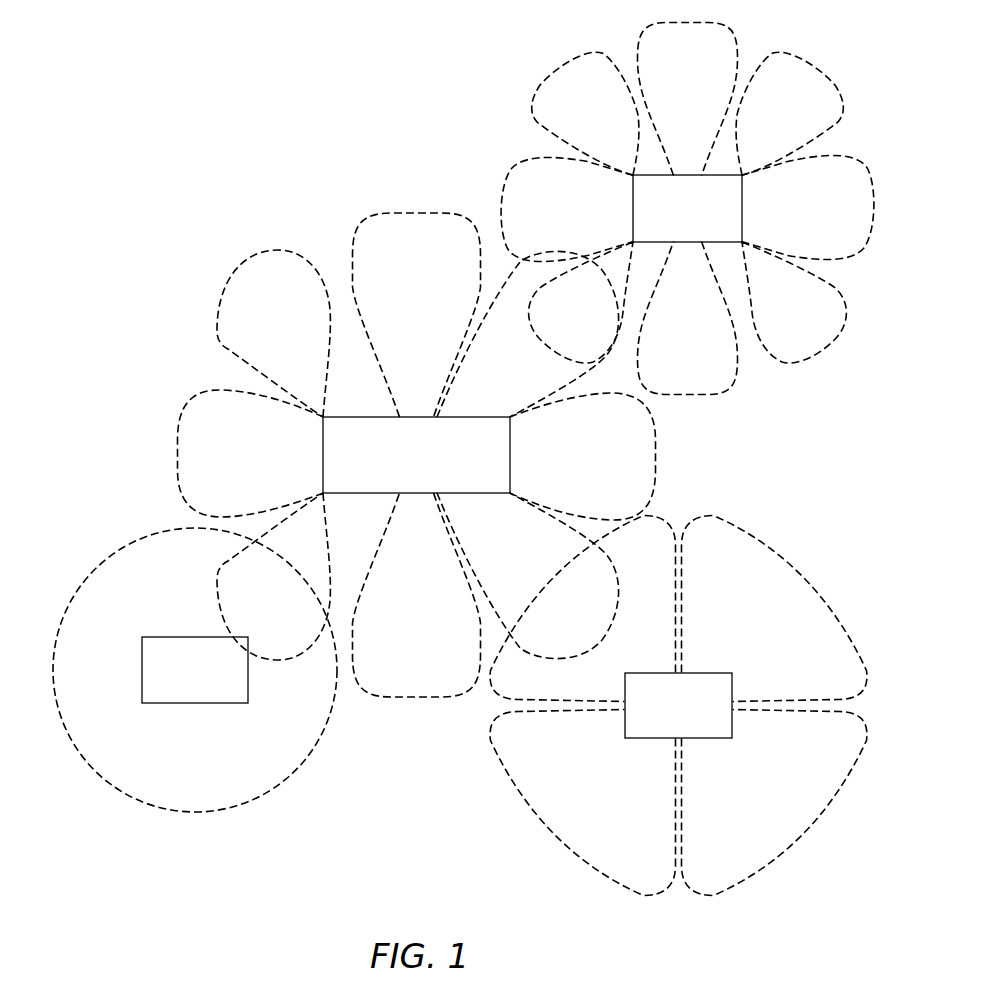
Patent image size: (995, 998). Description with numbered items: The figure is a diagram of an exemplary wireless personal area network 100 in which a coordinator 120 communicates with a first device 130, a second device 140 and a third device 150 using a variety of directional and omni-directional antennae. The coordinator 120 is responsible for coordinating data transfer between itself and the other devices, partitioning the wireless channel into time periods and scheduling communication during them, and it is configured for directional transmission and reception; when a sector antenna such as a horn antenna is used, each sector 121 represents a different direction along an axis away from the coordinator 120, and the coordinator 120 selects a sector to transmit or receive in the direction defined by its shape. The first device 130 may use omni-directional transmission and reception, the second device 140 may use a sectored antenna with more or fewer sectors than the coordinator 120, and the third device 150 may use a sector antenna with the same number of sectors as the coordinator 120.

The wireless network 100 is at (121, 93).
The coordinator 120 is at (510, 455).
The sector 121 is at (377, 217).
The first device 130 is at (173, 637).
The second device 140 is at (707, 673).
The third device 150 is at (633, 212).